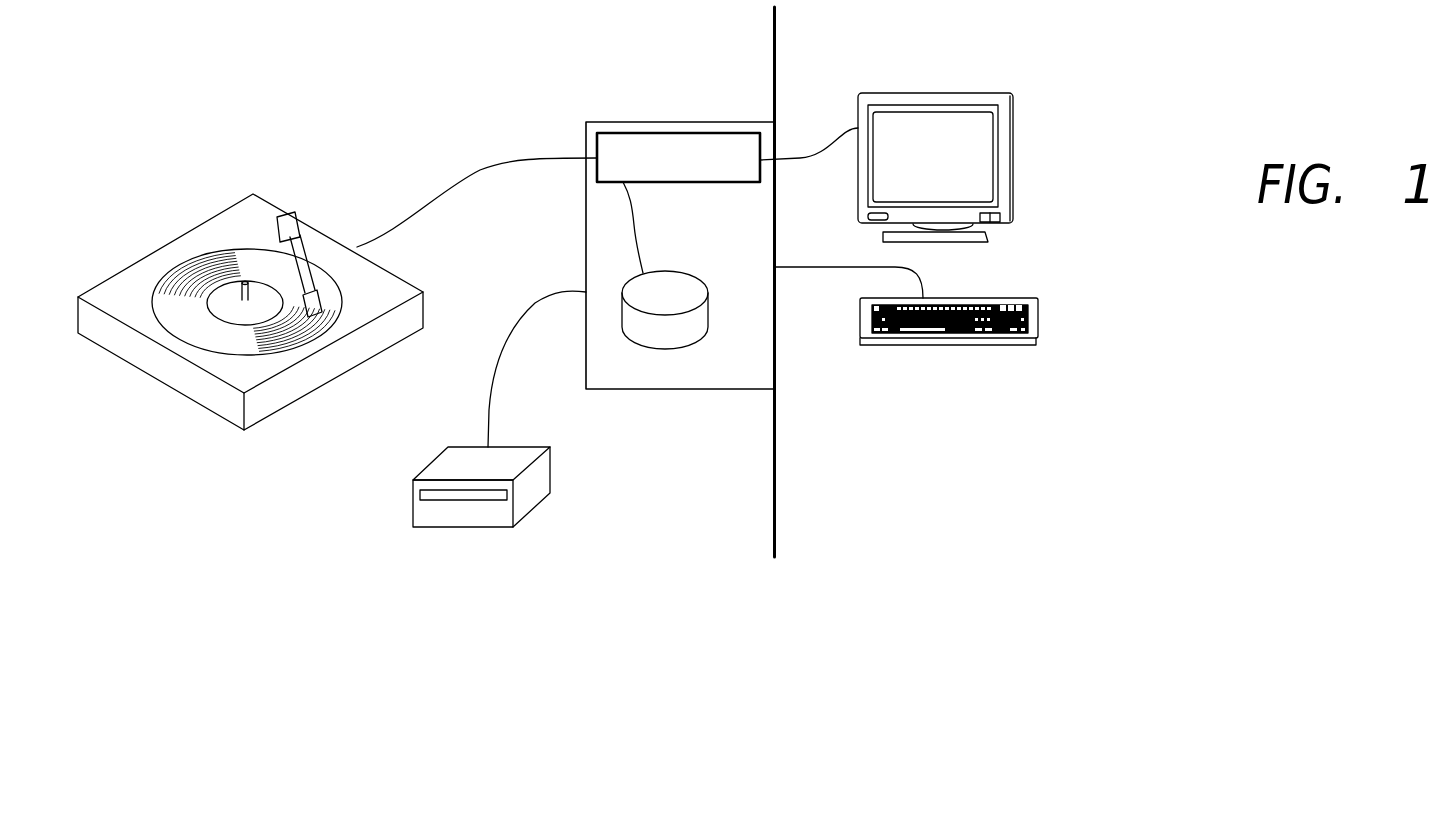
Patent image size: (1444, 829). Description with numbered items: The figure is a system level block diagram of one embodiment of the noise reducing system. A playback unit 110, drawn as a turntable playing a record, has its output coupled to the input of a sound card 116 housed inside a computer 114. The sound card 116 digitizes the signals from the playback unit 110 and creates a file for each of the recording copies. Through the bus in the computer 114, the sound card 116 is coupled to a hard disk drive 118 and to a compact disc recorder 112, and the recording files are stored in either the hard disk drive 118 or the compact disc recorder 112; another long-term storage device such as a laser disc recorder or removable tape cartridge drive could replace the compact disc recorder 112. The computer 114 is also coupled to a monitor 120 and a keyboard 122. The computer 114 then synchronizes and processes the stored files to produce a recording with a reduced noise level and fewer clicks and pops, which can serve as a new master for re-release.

The playback unit 110 is at (195, 238).
The compact disc recorder 112 is at (413, 500).
The computer 114 is at (613, 122).
The sound card 116 is at (603, 173).
The hard disk drive 118 is at (707, 325).
The monitor 120 is at (1015, 133).
The keyboard 122 is at (1038, 327).